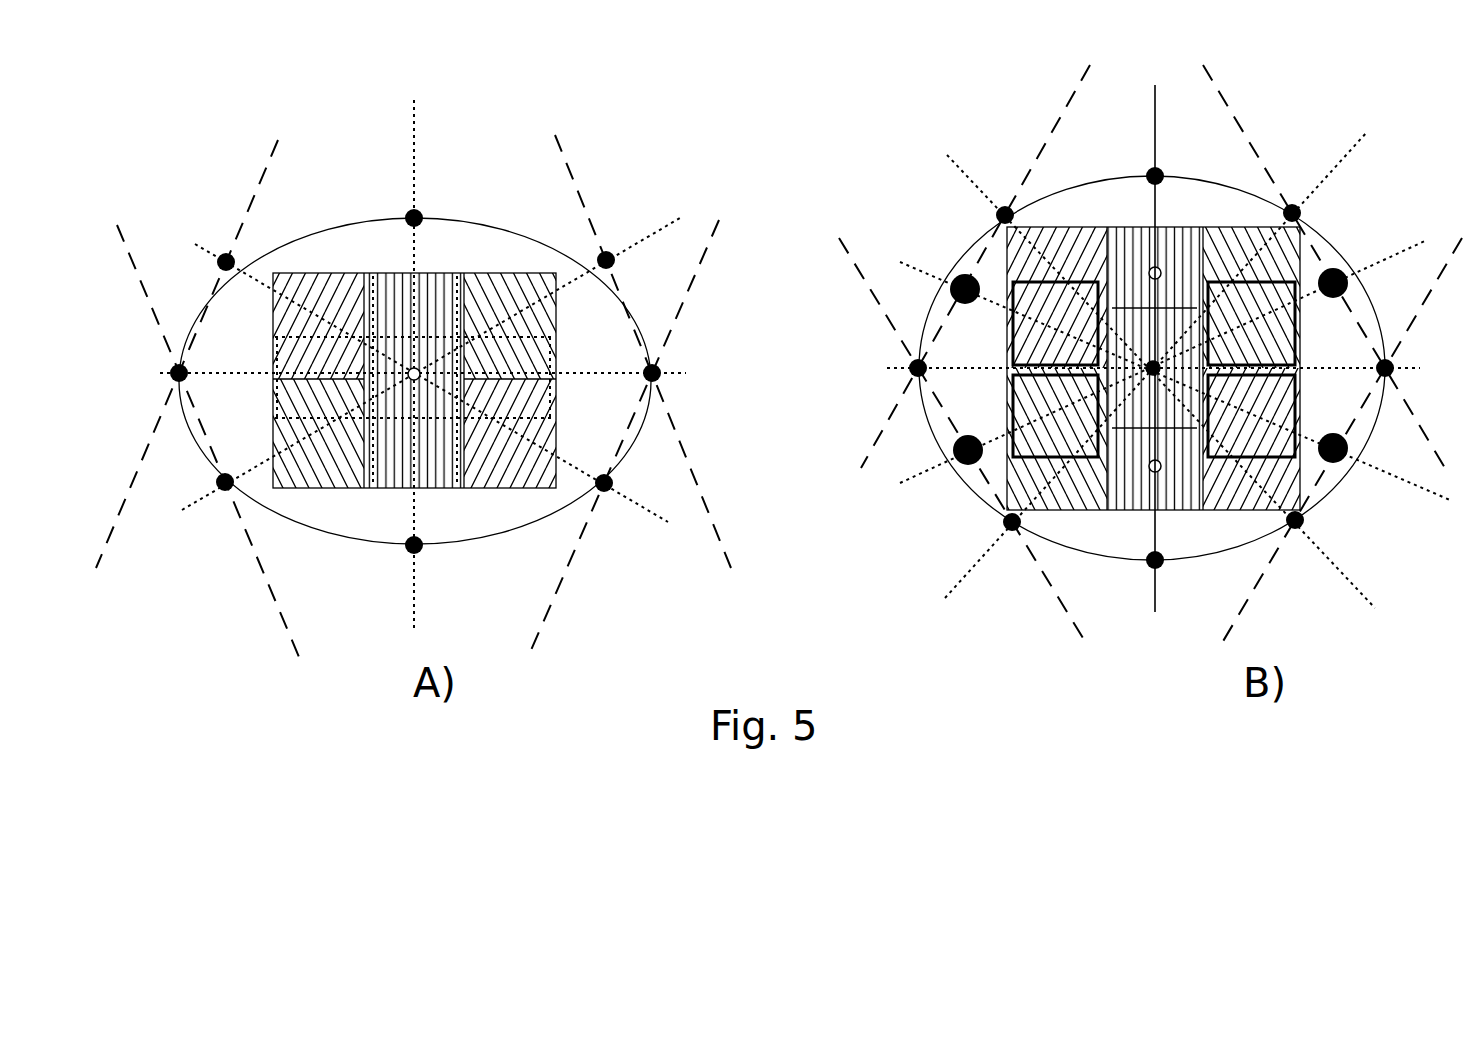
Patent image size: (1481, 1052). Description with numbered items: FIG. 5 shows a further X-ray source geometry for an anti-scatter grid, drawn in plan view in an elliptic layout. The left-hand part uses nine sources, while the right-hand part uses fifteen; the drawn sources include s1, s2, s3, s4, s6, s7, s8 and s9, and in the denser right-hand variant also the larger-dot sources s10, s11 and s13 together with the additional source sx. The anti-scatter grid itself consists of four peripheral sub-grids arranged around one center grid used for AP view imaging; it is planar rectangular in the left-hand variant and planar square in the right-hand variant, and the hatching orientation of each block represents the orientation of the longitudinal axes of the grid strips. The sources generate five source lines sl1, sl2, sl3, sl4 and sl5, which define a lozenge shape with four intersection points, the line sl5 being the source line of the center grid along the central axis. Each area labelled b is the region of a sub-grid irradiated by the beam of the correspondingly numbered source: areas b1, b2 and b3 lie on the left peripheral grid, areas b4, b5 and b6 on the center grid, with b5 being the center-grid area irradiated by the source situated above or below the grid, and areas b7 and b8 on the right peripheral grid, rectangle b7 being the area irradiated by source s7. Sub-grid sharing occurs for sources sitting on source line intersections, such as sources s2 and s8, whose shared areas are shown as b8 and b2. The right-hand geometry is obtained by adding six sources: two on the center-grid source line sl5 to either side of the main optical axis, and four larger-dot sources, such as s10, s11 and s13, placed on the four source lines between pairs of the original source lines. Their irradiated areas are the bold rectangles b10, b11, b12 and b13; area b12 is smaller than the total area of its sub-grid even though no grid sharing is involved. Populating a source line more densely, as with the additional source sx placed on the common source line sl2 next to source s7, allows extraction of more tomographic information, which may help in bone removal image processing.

The X-ray source s1 is at (955, 529).
The X-ray source s2 is at (1051, 379).
The X-ray source s3 is at (956, 217).
The X-ray source s4 is at (800, 565).
The X-ray source s6 is at (800, 170).
The X-ray source s7 is at (608, 508).
The X-ray source s8 is at (527, 376).
The X-ray source s9 is at (595, 219).
The X-ray source s10 is at (1358, 470).
The X-ray source s11 is at (1352, 264).
The X-ray source s13 is at (938, 267).
The additional source sx is at (932, 478).
The source line sl1 is at (995, 438).
The source line sl2 is at (601, 441).
The source line sl3 is at (593, 316).
The source line sl4 is at (1000, 316).
The source line sl5 is at (1157, 369).
The irradiated area b1 is at (318, 305).
The irradiated area b2 is at (318, 377).
The irradiated area b3 is at (318, 453).
The irradiated area b4 is at (414, 305).
The irradiated area b5 is at (414, 377).
The irradiated area b6 is at (414, 453).
The irradiated area b7 is at (510, 305).
The irradiated area b8 is at (510, 412).
The irradiated area b10 is at (1055, 323).
The irradiated area b11 is at (1055, 416).
The irradiated area b12 is at (1251, 323).
The irradiated area b13 is at (1251, 416).